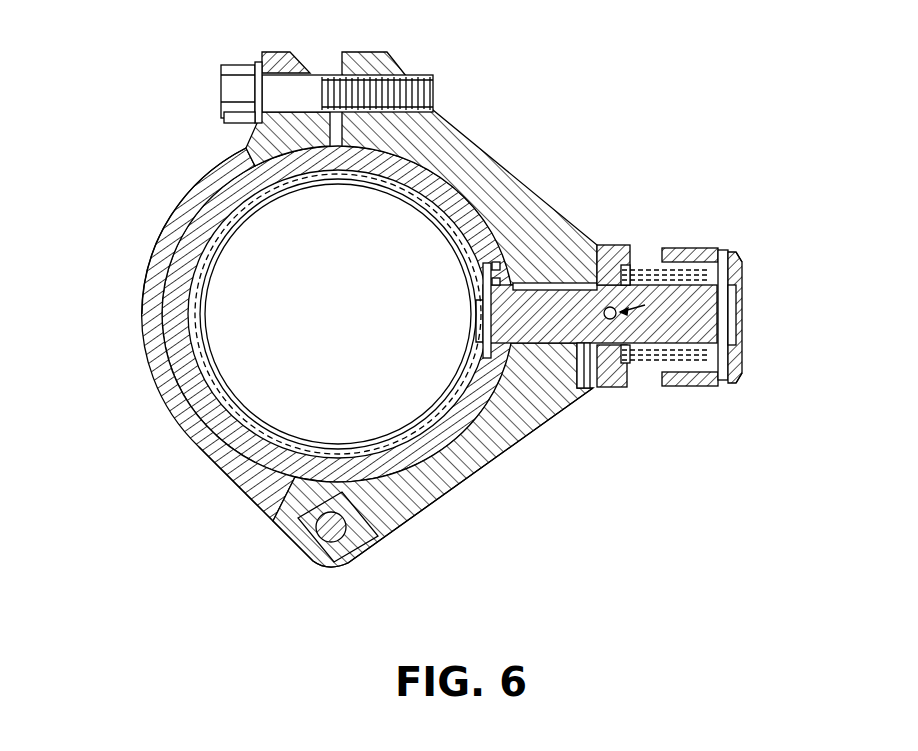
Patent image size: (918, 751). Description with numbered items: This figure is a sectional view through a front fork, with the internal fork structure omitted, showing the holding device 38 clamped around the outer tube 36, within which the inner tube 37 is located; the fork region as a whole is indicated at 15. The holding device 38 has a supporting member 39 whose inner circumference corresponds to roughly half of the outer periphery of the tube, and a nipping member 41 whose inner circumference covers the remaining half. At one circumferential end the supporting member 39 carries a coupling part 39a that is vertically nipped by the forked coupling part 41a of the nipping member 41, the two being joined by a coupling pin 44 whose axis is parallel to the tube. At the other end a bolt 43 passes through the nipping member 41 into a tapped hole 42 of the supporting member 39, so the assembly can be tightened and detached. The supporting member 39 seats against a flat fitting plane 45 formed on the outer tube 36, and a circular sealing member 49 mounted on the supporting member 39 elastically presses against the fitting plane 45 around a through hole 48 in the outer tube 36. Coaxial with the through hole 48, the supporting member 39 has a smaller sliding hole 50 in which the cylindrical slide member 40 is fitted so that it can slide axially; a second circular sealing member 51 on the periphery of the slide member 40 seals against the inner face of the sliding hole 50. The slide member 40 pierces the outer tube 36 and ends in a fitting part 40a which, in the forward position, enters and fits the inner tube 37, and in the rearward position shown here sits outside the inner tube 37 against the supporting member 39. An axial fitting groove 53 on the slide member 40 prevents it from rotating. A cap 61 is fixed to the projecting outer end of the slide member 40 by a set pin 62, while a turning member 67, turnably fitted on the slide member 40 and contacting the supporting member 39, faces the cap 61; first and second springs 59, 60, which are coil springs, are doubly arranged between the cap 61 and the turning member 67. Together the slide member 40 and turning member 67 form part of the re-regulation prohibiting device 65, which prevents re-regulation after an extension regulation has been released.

The clamp assembly 15 is at (160, 297).
The outer tube 36 is at (212, 191).
The inner tube 37 is at (190, 343).
The holding device 38 is at (606, 245).
The supporting member 39 is at (537, 205).
The coupling part 39a is at (290, 523).
The slide member 40 is at (512, 372).
The fitting part 40a is at (478, 294).
The nipping member 41 is at (197, 447).
The forked coupling part 41a is at (410, 528).
The tapped hole 42 is at (434, 104).
The bolt 43 is at (222, 93).
The coupling pin 44 is at (331, 542).
The fitting plane 45 is at (493, 268).
The through hole 48 is at (484, 334).
The circular sealing member 49 is at (503, 365).
The sliding hole 50 is at (511, 290).
The circular sealing member 51 is at (559, 288).
The fitting groove 53 is at (673, 346).
The first spring 59 is at (713, 258).
The second spring 60 is at (742, 319).
The cap 61 is at (743, 262).
The set pin 62 is at (742, 365).
The re-regulation prohibiting device 65 is at (686, 270).
The turning member 67 is at (627, 387).